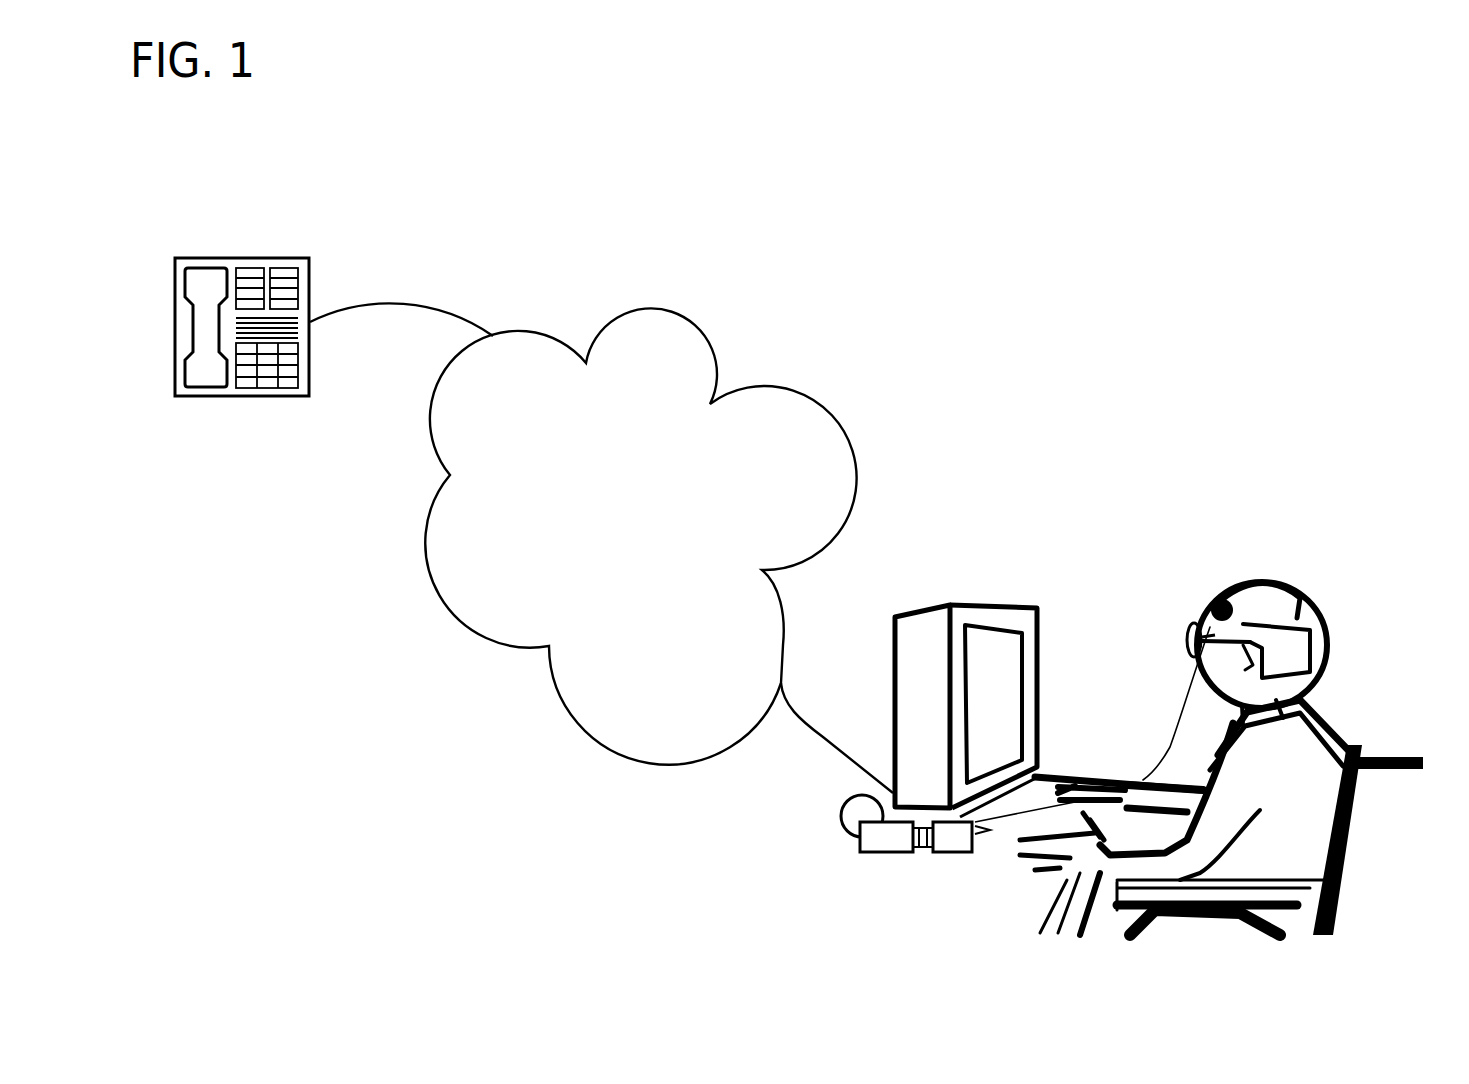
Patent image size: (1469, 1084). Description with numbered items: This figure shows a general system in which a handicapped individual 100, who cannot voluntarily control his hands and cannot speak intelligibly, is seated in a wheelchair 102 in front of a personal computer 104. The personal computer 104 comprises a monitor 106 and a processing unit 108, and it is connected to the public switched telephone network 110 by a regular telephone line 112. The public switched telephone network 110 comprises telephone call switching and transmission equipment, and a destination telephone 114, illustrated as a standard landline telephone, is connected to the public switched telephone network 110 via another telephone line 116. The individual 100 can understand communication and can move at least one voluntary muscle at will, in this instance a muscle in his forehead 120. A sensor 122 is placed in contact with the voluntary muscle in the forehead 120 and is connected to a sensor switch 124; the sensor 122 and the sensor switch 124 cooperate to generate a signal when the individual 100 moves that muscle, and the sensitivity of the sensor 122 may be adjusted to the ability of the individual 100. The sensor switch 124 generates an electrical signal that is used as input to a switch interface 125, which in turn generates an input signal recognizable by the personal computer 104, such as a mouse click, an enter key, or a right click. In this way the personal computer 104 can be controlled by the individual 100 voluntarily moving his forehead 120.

The individual 100 is at (1313, 703).
The wheelchair 102 is at (1340, 900).
The personal computer 104 is at (1093, 627).
The monitor 106 is at (937, 605).
The processing unit 108 is at (1047, 770).
The public switched telephone network 110 is at (803, 385).
The telephone line 112 is at (835, 750).
The destination telephone 114 is at (242, 258).
The telephone line 116 is at (393, 302).
The forehead 120 is at (1213, 633).
The sensor 122 is at (1213, 600).
The sensor switch 124 is at (947, 852).
The switch interface 125 is at (860, 852).